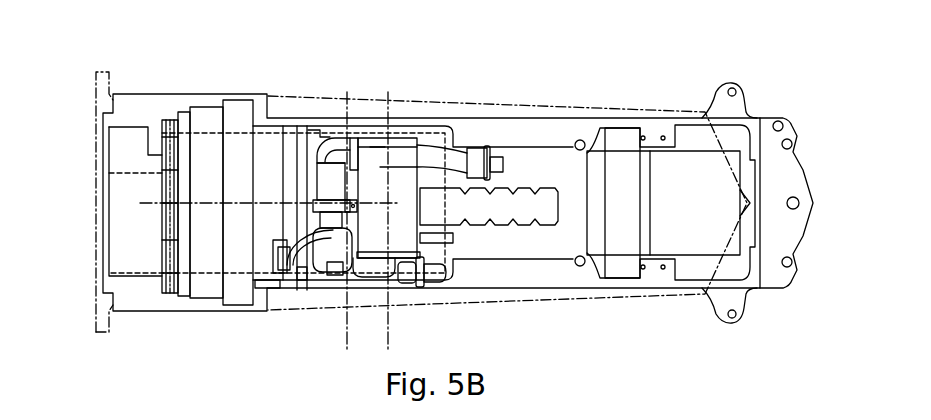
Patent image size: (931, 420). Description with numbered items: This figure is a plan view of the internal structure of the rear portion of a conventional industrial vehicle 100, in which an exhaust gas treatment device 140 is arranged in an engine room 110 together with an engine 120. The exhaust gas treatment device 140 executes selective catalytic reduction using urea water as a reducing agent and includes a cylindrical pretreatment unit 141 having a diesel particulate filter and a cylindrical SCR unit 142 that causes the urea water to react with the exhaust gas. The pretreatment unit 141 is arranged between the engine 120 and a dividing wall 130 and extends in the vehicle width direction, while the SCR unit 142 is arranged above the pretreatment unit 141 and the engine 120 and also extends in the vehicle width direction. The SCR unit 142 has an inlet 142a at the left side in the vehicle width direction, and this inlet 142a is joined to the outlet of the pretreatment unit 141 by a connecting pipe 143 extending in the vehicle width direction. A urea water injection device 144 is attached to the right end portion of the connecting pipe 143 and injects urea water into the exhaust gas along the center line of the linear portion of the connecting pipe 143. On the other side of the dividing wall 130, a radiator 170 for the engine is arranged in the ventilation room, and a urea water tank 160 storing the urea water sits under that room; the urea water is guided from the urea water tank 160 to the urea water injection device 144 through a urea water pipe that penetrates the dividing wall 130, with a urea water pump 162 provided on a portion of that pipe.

The industrial vehicle 100 is at (563, 60).
The engine room 110 is at (569, 280).
The engine 120 is at (523, 160).
The dividing wall 130 is at (300, 157).
The exhaust gas treatment device 140 is at (367, 282).
The pretreatment unit 141 is at (328, 137).
The SCR unit 142 is at (405, 147).
The inlet 142a is at (378, 146).
The connecting pipe 143 is at (291, 292).
The urea water injection device 144 is at (331, 274).
The urea water tank 160 is at (130, 172).
The urea water pump 162 is at (263, 290).
The radiator 170 is at (237, 113).